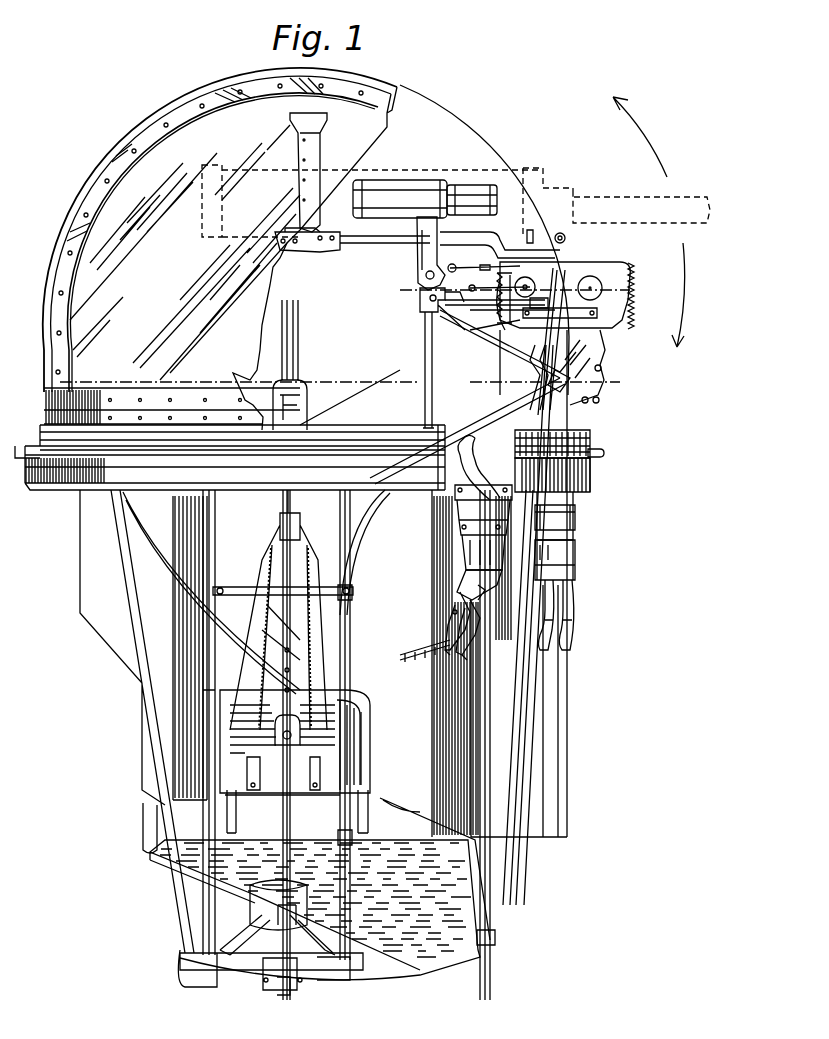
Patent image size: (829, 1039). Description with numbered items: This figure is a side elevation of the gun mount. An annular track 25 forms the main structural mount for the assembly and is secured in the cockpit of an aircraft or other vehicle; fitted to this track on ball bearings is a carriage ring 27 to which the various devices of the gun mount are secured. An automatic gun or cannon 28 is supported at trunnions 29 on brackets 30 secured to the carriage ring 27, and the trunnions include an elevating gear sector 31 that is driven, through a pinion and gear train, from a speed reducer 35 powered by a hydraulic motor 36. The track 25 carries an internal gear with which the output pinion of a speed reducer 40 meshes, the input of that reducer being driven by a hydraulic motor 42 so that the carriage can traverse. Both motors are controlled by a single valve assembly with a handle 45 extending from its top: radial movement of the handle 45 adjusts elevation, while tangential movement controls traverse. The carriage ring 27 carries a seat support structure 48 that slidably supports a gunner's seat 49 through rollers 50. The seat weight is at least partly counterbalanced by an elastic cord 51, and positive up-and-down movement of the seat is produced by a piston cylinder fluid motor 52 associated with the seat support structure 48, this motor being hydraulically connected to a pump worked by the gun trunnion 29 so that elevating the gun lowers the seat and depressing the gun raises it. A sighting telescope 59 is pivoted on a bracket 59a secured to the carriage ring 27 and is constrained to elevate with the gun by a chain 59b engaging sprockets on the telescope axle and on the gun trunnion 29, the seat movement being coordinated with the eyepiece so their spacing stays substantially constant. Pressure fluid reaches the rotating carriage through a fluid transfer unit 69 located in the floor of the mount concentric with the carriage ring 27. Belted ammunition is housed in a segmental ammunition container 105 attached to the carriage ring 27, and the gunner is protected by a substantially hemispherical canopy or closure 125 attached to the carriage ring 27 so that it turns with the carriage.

The canopy or closure 125 is at (118, 160).
The sighting telescope 59 is at (380, 184).
The bracket 59a is at (424, 343).
The chain 59b is at (421, 297).
The automatic gun or cannon 28 is at (423, 181).
The trunnions 29 is at (574, 273).
The elevating gear sector 31 is at (622, 281).
The brackets 30 is at (613, 304).
The carriage ring 27 is at (587, 440).
The annular track 25 is at (592, 452).
The handle 45 is at (487, 423).
The speed reducer 40 is at (482, 528).
The hydraulic motor 42 is at (457, 573).
The speed reducer 35 is at (556, 523).
The hydraulic motor 36 is at (573, 574).
The gunner's seat 49 is at (80, 598).
The elastic cord 51 is at (257, 643).
The seat support structure 48 is at (350, 660).
The rollers 50 is at (348, 703).
The piston cylinder fluid motor 52 is at (288, 815).
The segmental ammunition container 105 is at (398, 808).
The fluid transfer unit 69 is at (250, 907).